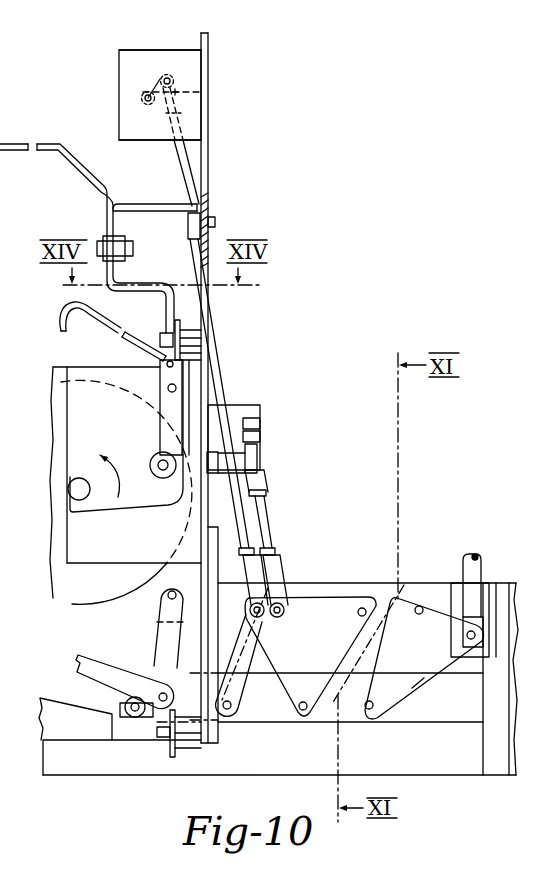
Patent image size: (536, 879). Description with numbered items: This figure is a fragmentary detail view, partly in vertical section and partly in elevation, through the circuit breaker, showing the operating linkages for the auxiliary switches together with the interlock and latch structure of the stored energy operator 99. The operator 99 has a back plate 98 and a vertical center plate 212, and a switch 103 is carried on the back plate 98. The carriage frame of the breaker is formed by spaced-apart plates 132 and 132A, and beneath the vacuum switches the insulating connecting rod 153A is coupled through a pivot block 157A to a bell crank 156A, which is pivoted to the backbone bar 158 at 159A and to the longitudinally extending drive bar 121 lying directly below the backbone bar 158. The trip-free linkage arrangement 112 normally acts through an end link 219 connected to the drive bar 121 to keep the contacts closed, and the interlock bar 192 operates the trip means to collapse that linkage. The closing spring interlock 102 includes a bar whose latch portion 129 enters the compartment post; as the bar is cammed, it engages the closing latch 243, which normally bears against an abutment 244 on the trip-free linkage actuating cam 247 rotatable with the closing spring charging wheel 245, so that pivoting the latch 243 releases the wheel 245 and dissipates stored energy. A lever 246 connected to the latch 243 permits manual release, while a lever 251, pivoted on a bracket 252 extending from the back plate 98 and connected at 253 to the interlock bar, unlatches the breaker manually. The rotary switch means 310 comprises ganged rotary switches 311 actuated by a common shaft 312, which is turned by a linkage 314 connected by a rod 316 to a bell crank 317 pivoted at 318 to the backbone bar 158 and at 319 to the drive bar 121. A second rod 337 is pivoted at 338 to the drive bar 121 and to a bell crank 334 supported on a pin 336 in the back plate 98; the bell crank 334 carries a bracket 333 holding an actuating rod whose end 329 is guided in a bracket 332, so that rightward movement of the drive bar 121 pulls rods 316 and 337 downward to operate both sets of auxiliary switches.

The back plate 98 is at (209, 147).
The stored energy operator 99 is at (45, 512).
The closing spring interlock 102 is at (120, 347).
The switch 103 is at (188, 221).
The trip-free linkage arrangement 112 is at (67, 667).
The drive bar 121 is at (418, 714).
The latch portion 129 is at (197, 337).
The frame plate 132 is at (250, 770).
The frame plate 132A is at (497, 775).
The insulating connecting rod 153A is at (495, 538).
The bell crank 156A is at (418, 683).
The pivot block 157A is at (470, 648).
The backbone bar 158 is at (412, 585).
The bell crank pivot 159A is at (418, 614).
The interlock bar 192 is at (188, 736).
The vertical center plate 212 is at (70, 550).
The end link 219 is at (95, 645).
The closing latch 243 is at (162, 400).
The abutment 244 is at (156, 463).
The closing spring charging wheel 245 is at (78, 582).
The lever 246 is at (66, 311).
The trip-free linkage actuating cam 247 is at (107, 503).
The lever 251 is at (80, 167).
The bracket 252 is at (135, 205).
The pivotal connection 253 is at (160, 338).
The rotary switch means 310 is at (140, 29).
The ganged rotary switches 311 is at (172, 55).
The common shaft 312 is at (143, 92).
The linkage 314 is at (200, 91).
The rod 316 is at (178, 153).
The bell crank 317 is at (311, 599).
The pivotal connection 318 is at (359, 616).
The pivotal connection 319 is at (303, 712).
The rod end 329 is at (26, 482).
The bracket 332 is at (248, 405).
The bracket 333 is at (260, 422).
The bell crank 334 is at (258, 448).
The pin 336 is at (245, 463).
The rod 337 is at (266, 522).
The pivotal connection 338 is at (277, 618).